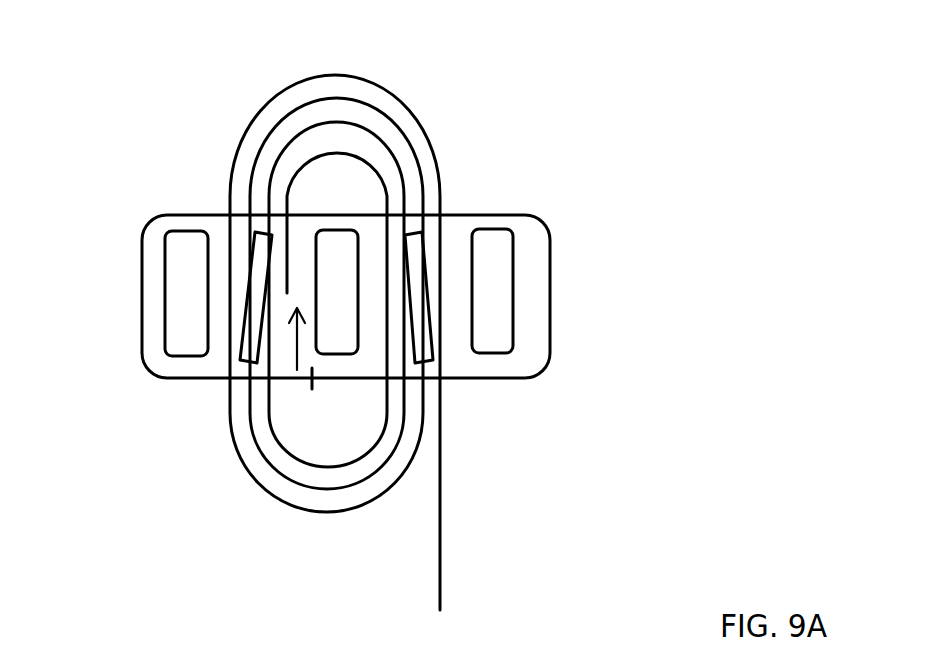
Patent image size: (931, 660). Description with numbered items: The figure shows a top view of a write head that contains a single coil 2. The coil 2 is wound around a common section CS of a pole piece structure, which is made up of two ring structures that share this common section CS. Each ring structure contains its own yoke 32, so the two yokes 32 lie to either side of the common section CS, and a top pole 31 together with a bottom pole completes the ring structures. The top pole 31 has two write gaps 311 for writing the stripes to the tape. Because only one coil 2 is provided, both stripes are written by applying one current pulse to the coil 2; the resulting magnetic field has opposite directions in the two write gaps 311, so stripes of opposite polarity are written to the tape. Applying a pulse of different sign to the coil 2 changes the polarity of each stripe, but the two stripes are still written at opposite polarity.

The coil 2 is at (407, 108).
The top pole 31 is at (490, 212).
The write gaps 311 is at (406, 236).
The yoke 32 is at (180, 352).
The common section CS is at (353, 268).